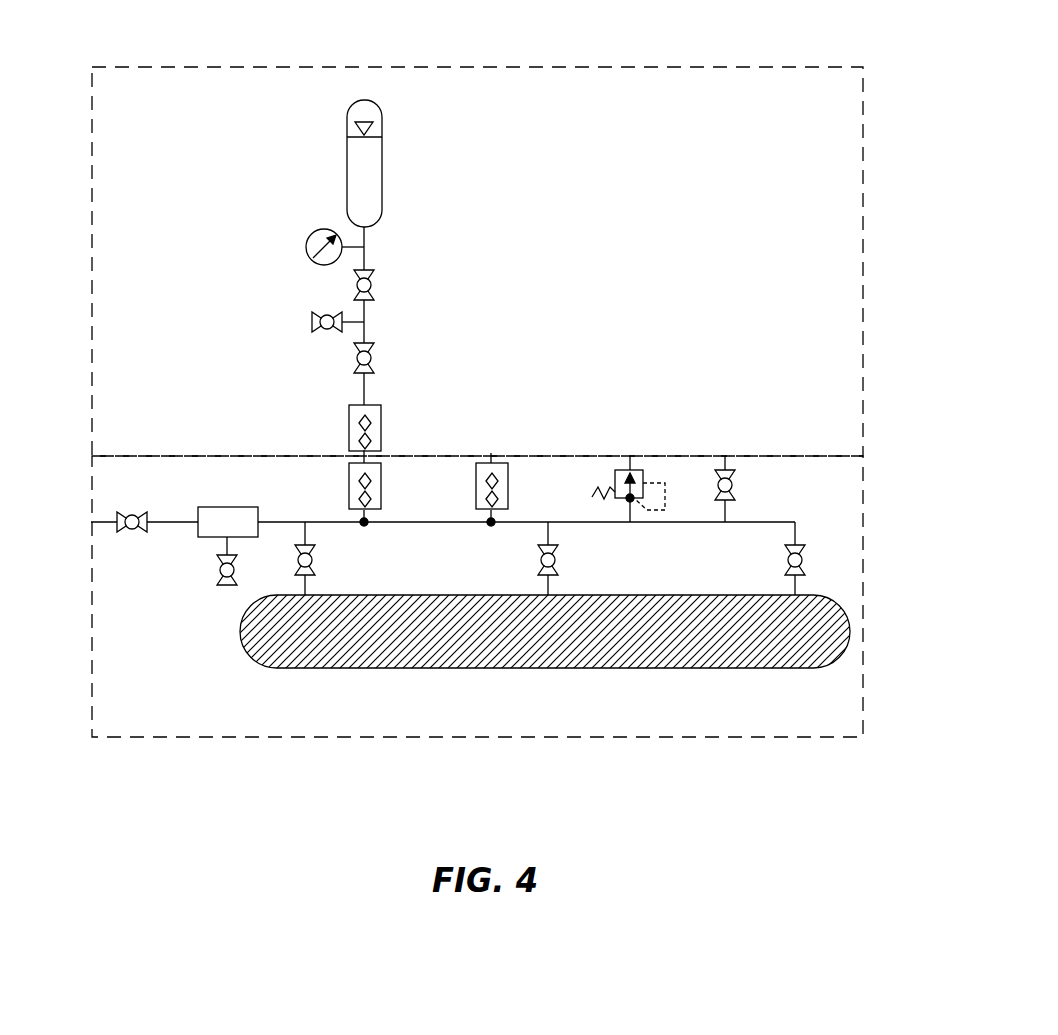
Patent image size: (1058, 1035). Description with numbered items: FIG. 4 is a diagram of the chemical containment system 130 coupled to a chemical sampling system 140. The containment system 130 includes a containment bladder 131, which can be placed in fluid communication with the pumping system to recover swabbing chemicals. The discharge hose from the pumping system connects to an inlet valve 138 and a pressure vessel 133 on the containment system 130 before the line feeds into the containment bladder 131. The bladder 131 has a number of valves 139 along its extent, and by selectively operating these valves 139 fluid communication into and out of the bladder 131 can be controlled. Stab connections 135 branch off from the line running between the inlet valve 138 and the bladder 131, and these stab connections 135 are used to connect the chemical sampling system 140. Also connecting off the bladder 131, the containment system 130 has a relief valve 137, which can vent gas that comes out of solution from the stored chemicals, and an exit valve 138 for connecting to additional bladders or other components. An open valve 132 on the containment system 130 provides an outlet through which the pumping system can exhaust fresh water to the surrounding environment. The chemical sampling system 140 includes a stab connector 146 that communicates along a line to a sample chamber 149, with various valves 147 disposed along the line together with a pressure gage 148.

The containment system 130 is at (495, 740).
The containment bladder 131 is at (277, 668).
The open valve 132 is at (224, 585).
The pressure vessel 133 is at (220, 507).
The stab connections 135 is at (477, 508).
The relief valve 137 is at (624, 500).
The inlet valve / exit valve 138 is at (148, 513).
The valves 139 is at (314, 560).
The chemical sampling system 140 is at (487, 66).
The stab connector 146 is at (382, 406).
The valves 147 is at (312, 322).
The pressure gage 148 is at (307, 244).
The sample chamber 149 is at (346, 149).